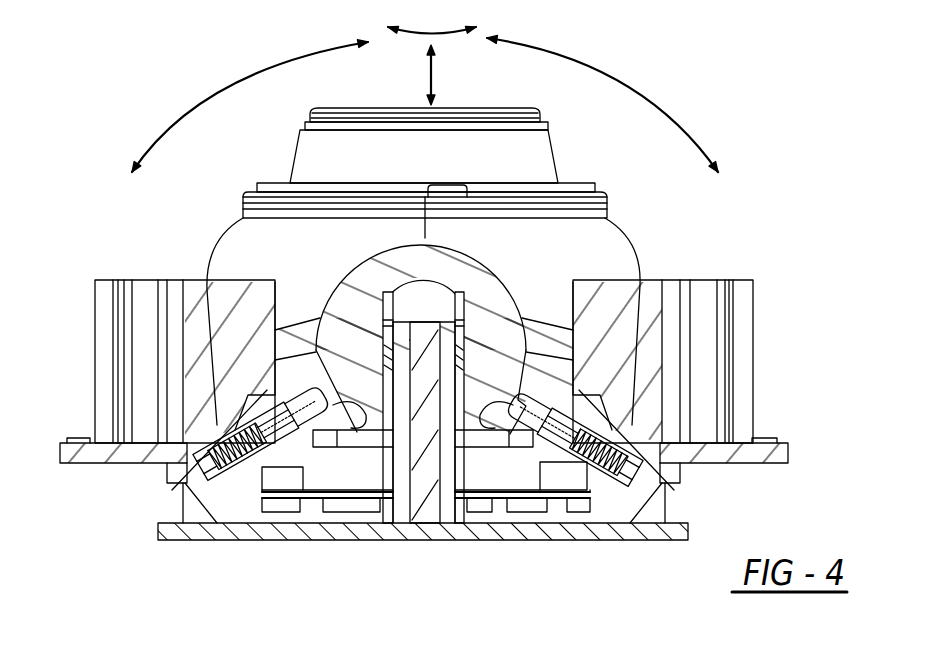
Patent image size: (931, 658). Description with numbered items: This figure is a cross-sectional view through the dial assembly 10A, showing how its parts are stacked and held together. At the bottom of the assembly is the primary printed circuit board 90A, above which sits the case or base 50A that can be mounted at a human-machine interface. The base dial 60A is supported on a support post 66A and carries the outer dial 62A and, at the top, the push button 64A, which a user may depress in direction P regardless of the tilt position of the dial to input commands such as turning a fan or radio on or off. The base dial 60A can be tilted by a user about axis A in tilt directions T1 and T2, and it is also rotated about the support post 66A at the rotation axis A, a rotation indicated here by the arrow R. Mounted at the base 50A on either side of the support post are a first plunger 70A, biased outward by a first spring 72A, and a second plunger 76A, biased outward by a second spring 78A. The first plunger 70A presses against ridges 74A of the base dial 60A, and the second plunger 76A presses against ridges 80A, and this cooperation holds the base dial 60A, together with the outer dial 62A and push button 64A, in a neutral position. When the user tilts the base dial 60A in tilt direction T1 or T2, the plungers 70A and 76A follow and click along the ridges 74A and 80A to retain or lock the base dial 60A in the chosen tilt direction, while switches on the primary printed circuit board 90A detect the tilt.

The dial assembly 10A is at (484, 248).
The base 50A is at (738, 375).
The base dial 60A is at (598, 252).
The outer dial 62A is at (545, 152).
The push button 64A is at (520, 70).
The support post 66A is at (419, 336).
The first plunger 70A is at (320, 403).
The first spring 72A is at (233, 450).
The ridges 74A is at (357, 420).
The second plunger 76A is at (528, 405).
The second spring 78A is at (598, 448).
The ridges 80A is at (482, 420).
The primary printed circuit board 90A is at (421, 538).
The axis A is at (432, 341).
The direction P is at (424, 75).
The rotation direction R is at (432, 19).
The tilt direction T1 is at (250, 106).
The tilt direction T2 is at (602, 103).